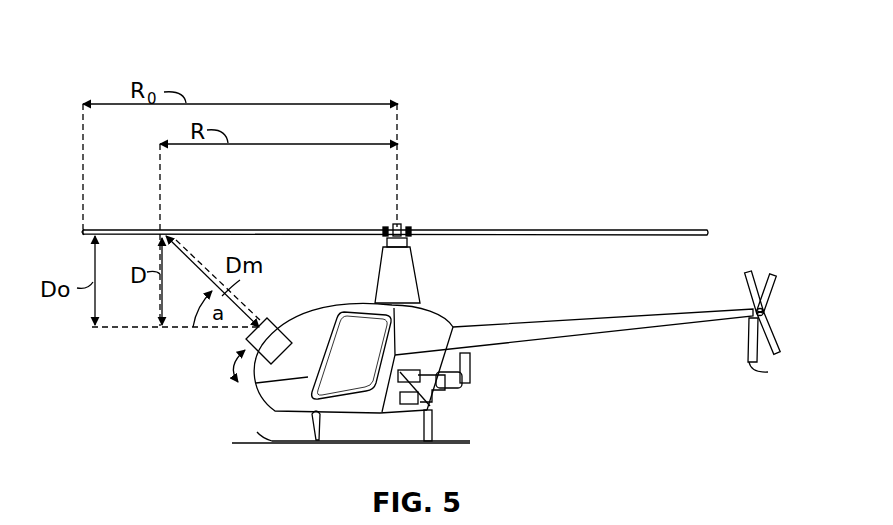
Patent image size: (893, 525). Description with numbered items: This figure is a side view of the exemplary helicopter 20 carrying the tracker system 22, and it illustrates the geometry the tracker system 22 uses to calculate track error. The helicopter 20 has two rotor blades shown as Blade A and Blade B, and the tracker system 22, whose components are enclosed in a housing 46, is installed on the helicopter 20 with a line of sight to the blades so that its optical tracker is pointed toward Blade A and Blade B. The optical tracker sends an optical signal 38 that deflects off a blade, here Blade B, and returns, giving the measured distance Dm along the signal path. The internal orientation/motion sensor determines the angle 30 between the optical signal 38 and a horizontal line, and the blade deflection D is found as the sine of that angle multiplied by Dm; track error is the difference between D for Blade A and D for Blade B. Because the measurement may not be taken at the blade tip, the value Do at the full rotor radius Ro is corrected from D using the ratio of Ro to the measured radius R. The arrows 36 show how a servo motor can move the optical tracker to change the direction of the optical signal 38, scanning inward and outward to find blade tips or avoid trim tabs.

The helicopter 20 is at (124, 41).
The tracker system 22 is at (291, 332).
The angle 30 is at (188, 328).
The arrows 36 is at (234, 369).
The optical signal 38 is at (201, 270).
The housing 46 is at (270, 320).
The Blade A is at (701, 230).
The Blade B is at (90, 230).